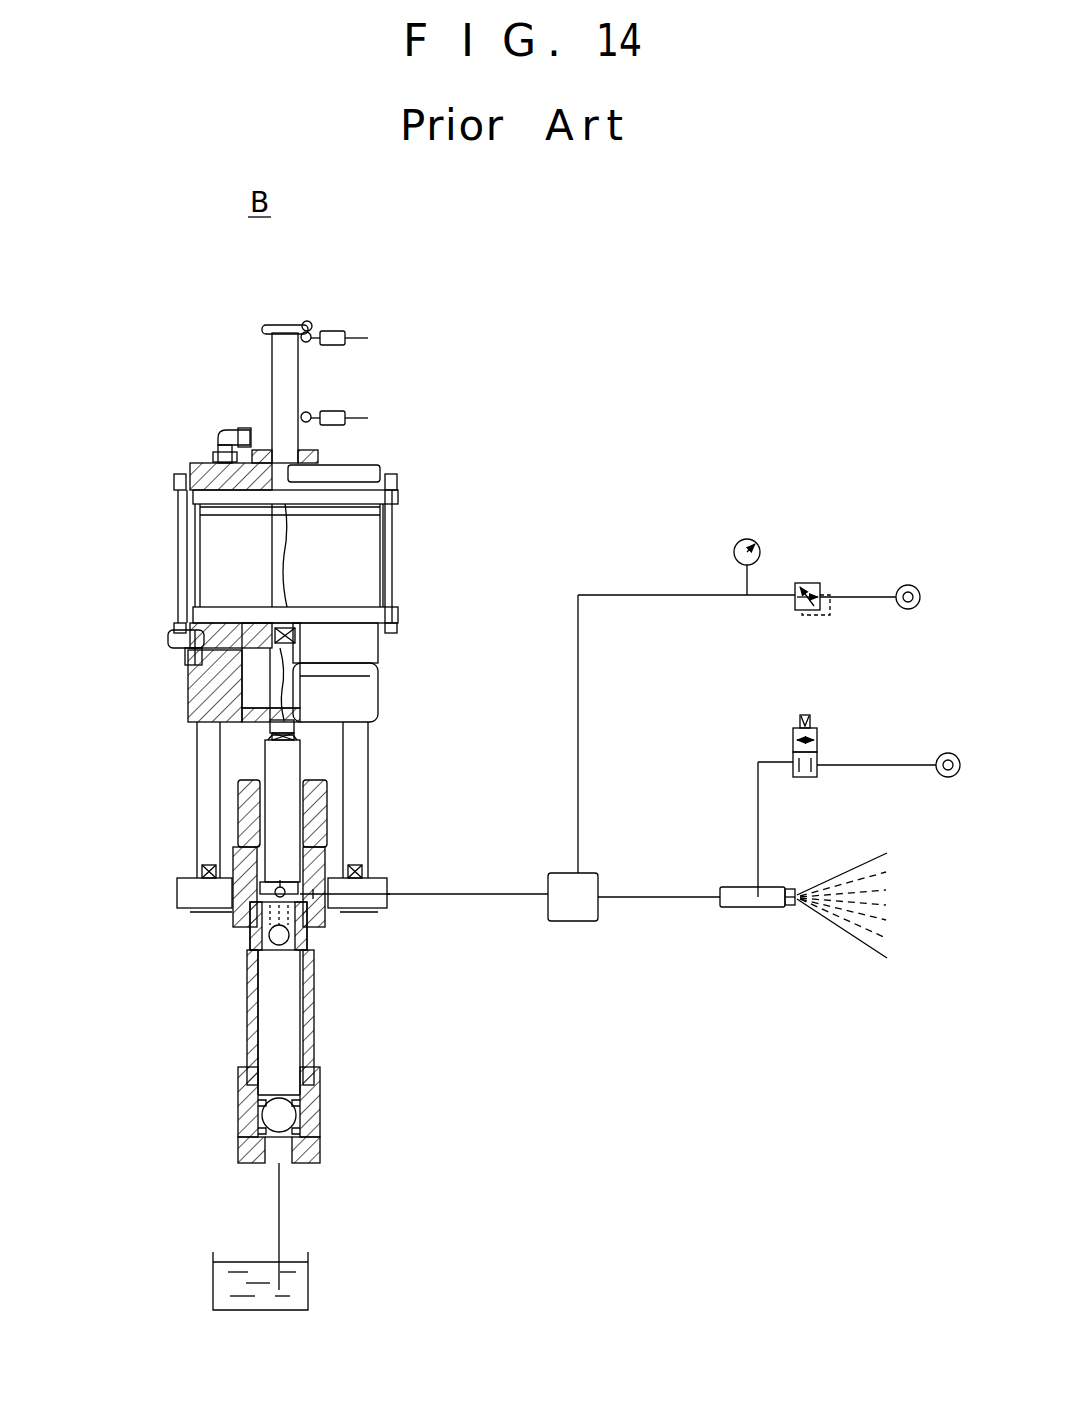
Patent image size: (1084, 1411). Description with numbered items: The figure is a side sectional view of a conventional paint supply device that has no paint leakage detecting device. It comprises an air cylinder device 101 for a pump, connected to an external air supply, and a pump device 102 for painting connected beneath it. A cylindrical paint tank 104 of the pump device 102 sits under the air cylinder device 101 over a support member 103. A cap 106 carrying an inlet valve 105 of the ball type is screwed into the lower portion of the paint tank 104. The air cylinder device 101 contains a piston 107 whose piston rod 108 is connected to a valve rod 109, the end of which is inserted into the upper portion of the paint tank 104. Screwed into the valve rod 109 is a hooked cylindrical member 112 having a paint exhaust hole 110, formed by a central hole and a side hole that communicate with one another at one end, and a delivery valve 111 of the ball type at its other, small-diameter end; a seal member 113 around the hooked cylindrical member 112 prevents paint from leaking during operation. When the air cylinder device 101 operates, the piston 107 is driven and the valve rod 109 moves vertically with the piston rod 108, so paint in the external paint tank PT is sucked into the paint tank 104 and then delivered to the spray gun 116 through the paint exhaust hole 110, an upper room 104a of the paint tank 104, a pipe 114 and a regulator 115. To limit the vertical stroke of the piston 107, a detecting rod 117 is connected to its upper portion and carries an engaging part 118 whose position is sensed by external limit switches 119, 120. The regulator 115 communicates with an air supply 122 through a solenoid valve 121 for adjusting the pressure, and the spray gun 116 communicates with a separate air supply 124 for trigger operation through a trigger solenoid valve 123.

The air cylinder device 101 is at (407, 560).
The pump device 102 is at (328, 1030).
The support member 103 is at (207, 836).
The paint tank 104 is at (245, 1055).
The upper room 104a is at (333, 900).
The inlet valve 105 is at (282, 1113).
The cap 106 is at (312, 1140).
The piston 107 is at (237, 505).
The piston rod 108 is at (272, 580).
The valve rod 109 is at (290, 763).
The paint exhaust hole 110 is at (320, 888).
The delivery valve 111 is at (252, 932).
The hooked cylindrical member 112 is at (250, 968).
The seal member 113 is at (305, 935).
The pipe 114 is at (502, 900).
The regulator 115 is at (580, 918).
The spray gun 116 is at (748, 898).
The detecting rod 117 is at (282, 378).
The engaging part 118 is at (308, 324).
The limit switch 119 is at (330, 333).
The limit switch 120 is at (330, 413).
The solenoid valve 121 is at (805, 582).
The air supply 122 is at (907, 586).
The trigger solenoid valve 123 is at (793, 733).
The air supply 124 is at (943, 753).
The external paint tank PT is at (300, 1283).